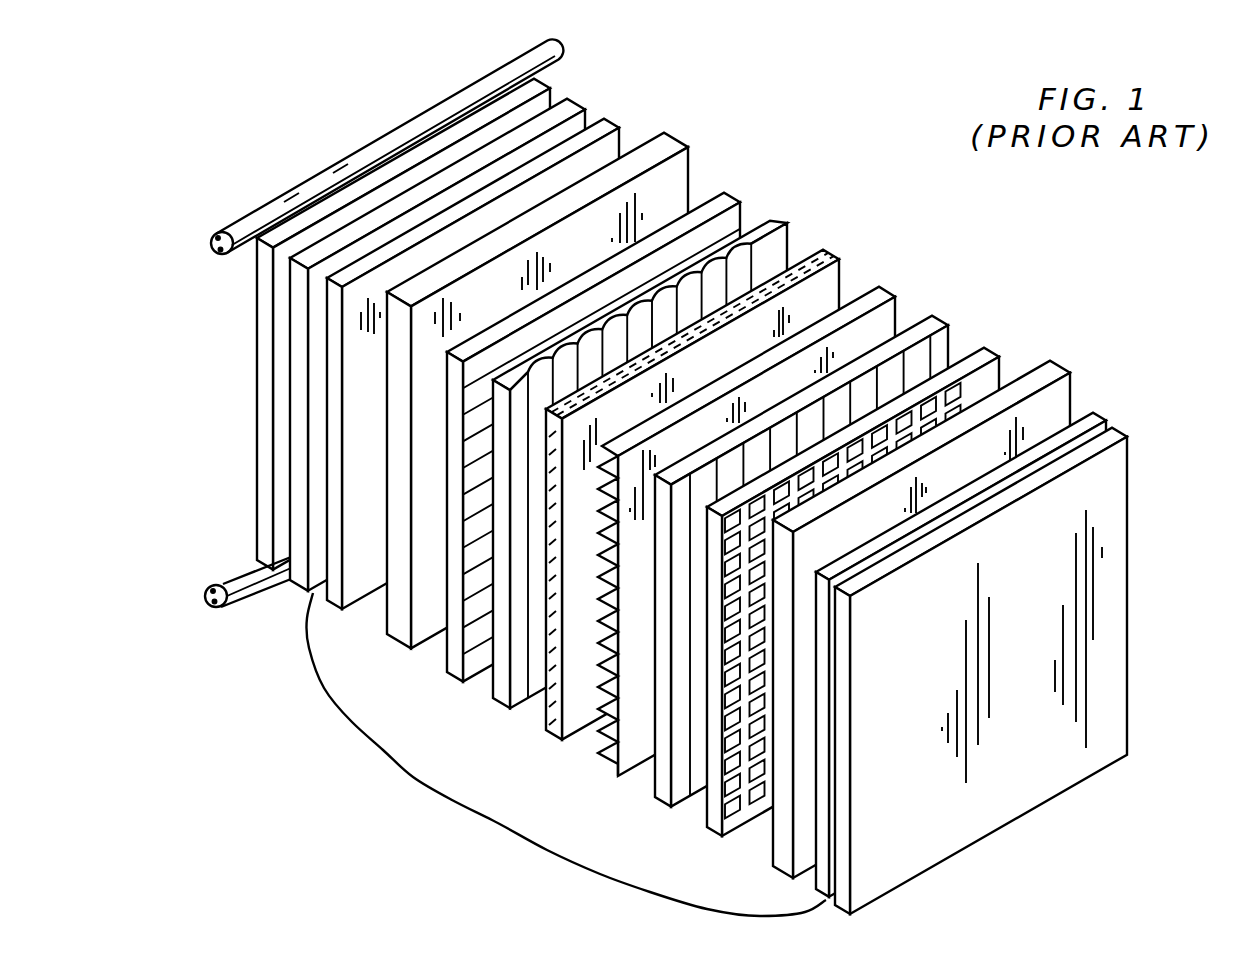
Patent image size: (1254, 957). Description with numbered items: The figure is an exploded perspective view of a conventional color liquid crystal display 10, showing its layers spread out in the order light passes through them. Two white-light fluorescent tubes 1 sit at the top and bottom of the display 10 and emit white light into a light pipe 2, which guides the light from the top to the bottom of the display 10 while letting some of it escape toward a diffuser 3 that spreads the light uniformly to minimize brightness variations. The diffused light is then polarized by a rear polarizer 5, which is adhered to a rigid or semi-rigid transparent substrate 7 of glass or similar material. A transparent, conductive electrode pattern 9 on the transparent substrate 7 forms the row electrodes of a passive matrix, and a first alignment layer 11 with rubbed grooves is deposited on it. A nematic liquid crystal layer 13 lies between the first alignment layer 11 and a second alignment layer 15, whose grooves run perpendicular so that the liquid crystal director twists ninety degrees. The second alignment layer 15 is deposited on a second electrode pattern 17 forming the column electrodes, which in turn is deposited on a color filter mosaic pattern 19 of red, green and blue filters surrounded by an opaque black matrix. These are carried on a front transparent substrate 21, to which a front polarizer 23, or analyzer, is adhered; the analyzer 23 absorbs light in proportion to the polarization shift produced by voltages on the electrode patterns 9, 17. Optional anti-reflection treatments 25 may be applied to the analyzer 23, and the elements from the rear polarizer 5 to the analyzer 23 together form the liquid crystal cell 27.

The white-light fluorescent tubes 1 is at (568, 43).
The light pipe 2 is at (534, 83).
The diffuser 3 is at (297, 588).
The rear polarizer 5 is at (614, 120).
The transparent substrate 7 is at (690, 140).
The electrode pattern 9 is at (748, 193).
The liquid crystal display 10 is at (684, 474).
The first alignment layer 11 is at (786, 228).
The nematic liquid crystal layer 13 is at (836, 259).
The second alignment layer 15 is at (894, 296).
The second electrode pattern 17 is at (946, 326).
The color filter mosaic pattern 19 is at (1000, 364).
The front transparent substrate 21 is at (1072, 372).
The front polarizer 23 is at (1105, 420).
The anti-reflection treatments 25 is at (1118, 492).
The liquid crystal cell 27 is at (430, 782).